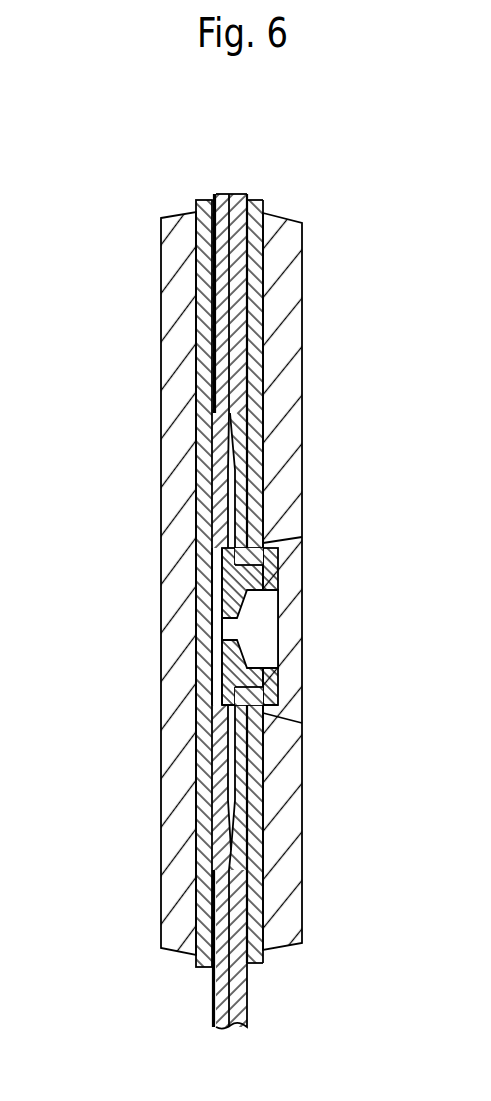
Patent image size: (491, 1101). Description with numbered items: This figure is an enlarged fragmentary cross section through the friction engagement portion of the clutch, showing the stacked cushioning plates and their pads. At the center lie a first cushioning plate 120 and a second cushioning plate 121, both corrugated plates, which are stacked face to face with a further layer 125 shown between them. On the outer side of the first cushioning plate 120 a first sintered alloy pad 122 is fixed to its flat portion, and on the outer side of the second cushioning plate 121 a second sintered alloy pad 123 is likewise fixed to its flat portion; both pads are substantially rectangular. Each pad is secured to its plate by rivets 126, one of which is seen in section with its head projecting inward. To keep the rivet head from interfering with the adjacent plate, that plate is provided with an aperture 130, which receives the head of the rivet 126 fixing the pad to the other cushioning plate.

The first cushioning plate 120 is at (222, 455).
The second cushioning plate 121 is at (240, 453).
The first sintered alloy pad 122 is at (172, 315).
The second sintered alloy pad 123 is at (293, 378).
The center layer stack 125 is at (236, 193).
The rivet 126 is at (278, 572).
The aperture 130 is at (220, 557).